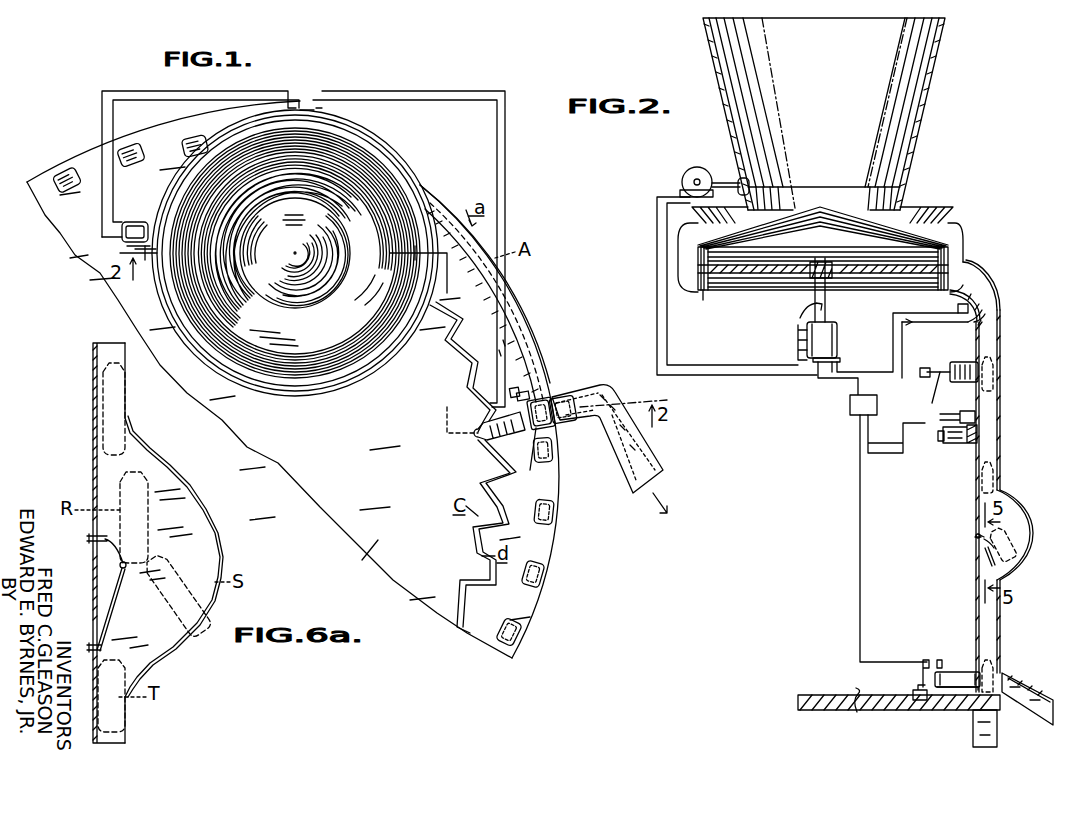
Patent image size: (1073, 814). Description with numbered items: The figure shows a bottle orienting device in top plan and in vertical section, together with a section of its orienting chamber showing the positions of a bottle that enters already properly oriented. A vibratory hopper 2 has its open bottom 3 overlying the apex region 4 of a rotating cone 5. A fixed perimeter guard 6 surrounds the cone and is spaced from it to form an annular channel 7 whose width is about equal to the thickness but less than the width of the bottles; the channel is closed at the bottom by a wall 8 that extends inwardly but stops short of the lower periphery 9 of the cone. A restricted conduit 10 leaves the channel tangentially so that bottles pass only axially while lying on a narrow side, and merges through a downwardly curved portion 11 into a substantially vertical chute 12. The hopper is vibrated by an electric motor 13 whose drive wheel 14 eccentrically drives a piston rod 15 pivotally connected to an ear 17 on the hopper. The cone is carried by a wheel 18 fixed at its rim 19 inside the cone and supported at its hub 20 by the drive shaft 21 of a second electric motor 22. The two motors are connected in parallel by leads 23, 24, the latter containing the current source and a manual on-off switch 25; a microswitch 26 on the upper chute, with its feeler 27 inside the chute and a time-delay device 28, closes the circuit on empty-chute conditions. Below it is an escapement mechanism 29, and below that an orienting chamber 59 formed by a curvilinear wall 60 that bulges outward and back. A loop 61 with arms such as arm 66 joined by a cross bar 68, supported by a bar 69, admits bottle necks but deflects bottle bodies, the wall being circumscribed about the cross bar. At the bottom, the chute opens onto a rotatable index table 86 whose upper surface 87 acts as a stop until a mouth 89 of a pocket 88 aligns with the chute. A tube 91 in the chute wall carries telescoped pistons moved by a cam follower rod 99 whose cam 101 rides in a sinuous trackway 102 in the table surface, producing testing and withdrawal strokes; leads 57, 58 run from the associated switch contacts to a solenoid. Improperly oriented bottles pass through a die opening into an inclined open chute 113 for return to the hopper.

In FIG. 1, the vibratory hopper 2 is at (292, 368).
In FIG. 2, the vibratory hopper 2 is at (924, 88).
In FIG. 2, the open bottom 3 is at (886, 200).
In FIG. 1, the apex region 4 is at (312, 293).
In FIG. 2, the apex region 4 is at (811, 207).
In FIG. 2, the rotating cone 5 is at (953, 251).
In FIG. 1, the perimeter guard 6 is at (338, 376).
In FIG. 2, the perimeter guard 6 is at (950, 231).
In FIG. 2, the annular channel 7 is at (690, 270).
In FIG. 2, the wall 8 is at (688, 284).
In FIG. 2, the lower periphery 9 is at (709, 306).
In FIG. 1, the conduit 10 is at (437, 212).
In FIG. 2, the conduit 10 is at (970, 276).
In FIG. 1, the downwardly curved portion 11 is at (545, 402).
In FIG. 2, the downwardly curved portion 11 is at (1000, 302).
In FIG. 6A, the chute 12 is at (93, 392).
In FIG. 2, the chute 12 is at (1001, 348).
In FIG. 1, the electric motor 13 is at (133, 220).
In FIG. 2, the electric motor 13 is at (682, 183).
In FIG. 2, the drive wheel 14 is at (693, 172).
In FIG. 2, the piston rod 15 is at (724, 183).
In FIG. 2, the ear 17 is at (744, 178).
In FIG. 2, the wheel 18 is at (756, 276).
In FIG. 2, the rim 19 is at (697, 264).
In FIG. 2, the hub 20 is at (831, 280).
In FIG. 2, the drive shaft 21 is at (799, 307).
In FIG. 2, the second electric motor 22 is at (807, 344).
In FIG. 1, the lead 23 is at (102, 128).
In FIG. 2, the lead 23 is at (865, 372).
In FIG. 1, the lead 24 is at (113, 124).
In FIG. 2, the lead 24 is at (844, 382).
In FIG. 1, the manual on-off switch 25 is at (500, 358).
In FIG. 2, the manual on-off switch 25 is at (938, 324).
In FIG. 1, the microswitch 26 is at (531, 430).
In FIG. 2, the microswitch 26 is at (968, 324).
In FIG. 1, the feeler 27 is at (532, 398).
In FIG. 2, the feeler 27 is at (986, 320).
In FIG. 1, the time-delay device 28 is at (520, 389).
In FIG. 2, the time-delay device 28 is at (958, 308).
In FIG. 2, the escapement mechanism 29 is at (918, 408).
In FIG. 2, the lead 57 is at (904, 444).
In FIG. 2, the lead 58 is at (930, 408).
In FIG. 6A, the orienting chamber 59 is at (206, 475).
In FIG. 2, the orienting chamber 59 is at (1034, 500).
In FIG. 6A, the curvilinear wall 60 is at (220, 520).
In FIG. 2, the curvilinear wall 60 is at (1031, 522).
In FIG. 6A, the loop 61 is at (107, 546).
In FIG. 2, the loop 61 is at (976, 538).
In FIG. 2, the loop arm 66 is at (984, 548).
In FIG. 2, the cross bar 68 is at (996, 545).
In FIG. 6A, the bar 69 is at (115, 604).
In FIG. 2, the bar 69 is at (996, 562).
In FIG. 1, the index table 86 is at (388, 495).
In FIG. 2, the index table 86 is at (827, 711).
In FIG. 1, the upper surface 87 is at (359, 561).
In FIG. 2, the upper surface 87 is at (859, 712).
In FIG. 1, the pocket 88 is at (62, 174).
In FIG. 2, the pocket 88 is at (973, 742).
In FIG. 1, the mouth 89 is at (542, 582).
In FIG. 1, the tube 91 is at (542, 459).
In FIG. 2, the tube 91 is at (957, 676).
In FIG. 1, the cam follower rod 99 is at (478, 432).
In FIG. 1, the cam 101 is at (477, 441).
In FIG. 1, the trackway 102 is at (478, 549).
In FIG. 1, the inclined open chute 113 is at (614, 455).
In FIG. 2, the inclined open chute 113 is at (1032, 680).